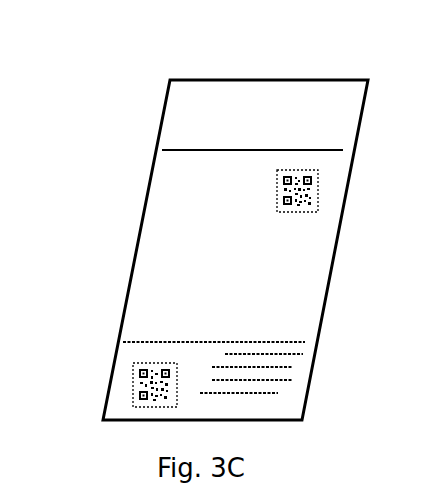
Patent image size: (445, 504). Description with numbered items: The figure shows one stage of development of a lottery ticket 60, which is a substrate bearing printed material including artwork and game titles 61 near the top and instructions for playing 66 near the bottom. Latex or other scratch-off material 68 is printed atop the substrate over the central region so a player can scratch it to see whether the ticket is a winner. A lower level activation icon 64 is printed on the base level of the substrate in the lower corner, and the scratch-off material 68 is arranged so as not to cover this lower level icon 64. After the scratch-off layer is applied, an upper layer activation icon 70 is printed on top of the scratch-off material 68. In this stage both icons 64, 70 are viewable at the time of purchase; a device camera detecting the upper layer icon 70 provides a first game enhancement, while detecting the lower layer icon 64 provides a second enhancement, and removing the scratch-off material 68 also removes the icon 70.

The lottery ticket 60 is at (190, 92).
The artwork and game titles 61 is at (313, 100).
The scratch-off material 68 is at (157, 252).
The upper layer activation icon 70 is at (313, 197).
The lower level activation icon 64 is at (140, 393).
The instructions for playing 66 is at (268, 380).